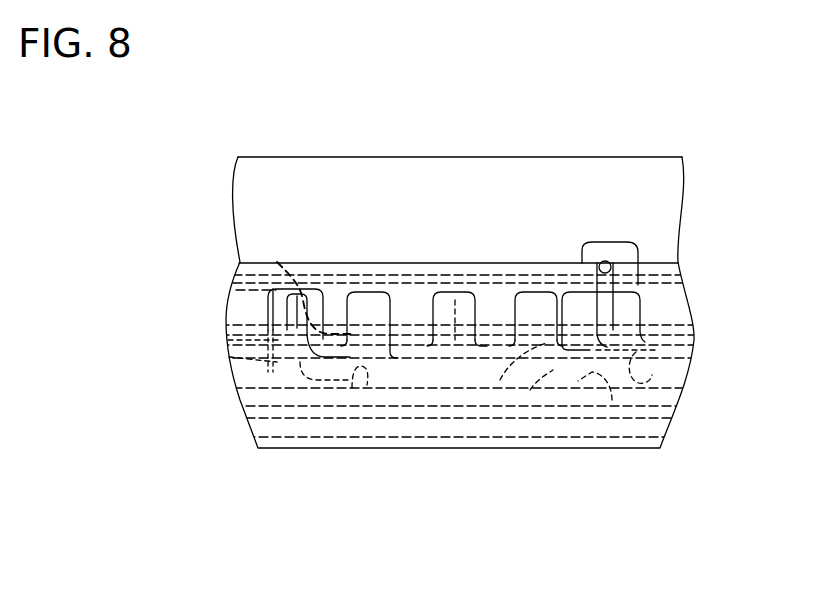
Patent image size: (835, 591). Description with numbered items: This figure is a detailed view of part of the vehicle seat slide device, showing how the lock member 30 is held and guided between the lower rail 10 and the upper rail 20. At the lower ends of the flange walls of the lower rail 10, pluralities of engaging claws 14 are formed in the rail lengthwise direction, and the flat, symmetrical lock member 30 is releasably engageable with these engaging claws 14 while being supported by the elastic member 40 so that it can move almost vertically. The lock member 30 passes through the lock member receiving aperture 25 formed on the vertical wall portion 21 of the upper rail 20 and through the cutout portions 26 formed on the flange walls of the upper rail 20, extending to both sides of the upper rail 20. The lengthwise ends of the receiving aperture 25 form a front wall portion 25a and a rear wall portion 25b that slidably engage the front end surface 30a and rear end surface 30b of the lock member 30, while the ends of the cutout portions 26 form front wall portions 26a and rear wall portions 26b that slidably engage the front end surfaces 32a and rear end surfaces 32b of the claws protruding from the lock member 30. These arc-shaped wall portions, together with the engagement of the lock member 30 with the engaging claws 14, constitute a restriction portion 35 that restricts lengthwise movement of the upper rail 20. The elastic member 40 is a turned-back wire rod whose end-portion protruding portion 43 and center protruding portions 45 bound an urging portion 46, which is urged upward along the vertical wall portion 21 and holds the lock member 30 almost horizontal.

The lower rail 10 is at (392, 450).
The engaging claws 14 is at (427, 343).
The upper rail 20 is at (552, 156).
The vertical wall portion 21 is at (447, 167).
The lock member receiving aperture 25 is at (580, 371).
The front wall portion 25a is at (285, 358).
The rear wall portion 25b is at (652, 380).
The cutout portions 26 is at (543, 371).
The front wall portions 26a is at (352, 388).
The rear wall portions 26b is at (500, 380).
The lock member 30 is at (416, 320).
The front end surface 30a is at (257, 325).
The rear end surface 30b is at (643, 335).
The front end surfaces 32a is at (306, 296).
The rear end surfaces 32b is at (587, 335).
The restriction portion 35 is at (363, 318).
The elastic member 40 is at (310, 360).
The end-portion protruding portion 43 is at (568, 332).
The center protruding portions 45 is at (277, 262).
The urging portion 46 is at (456, 340).